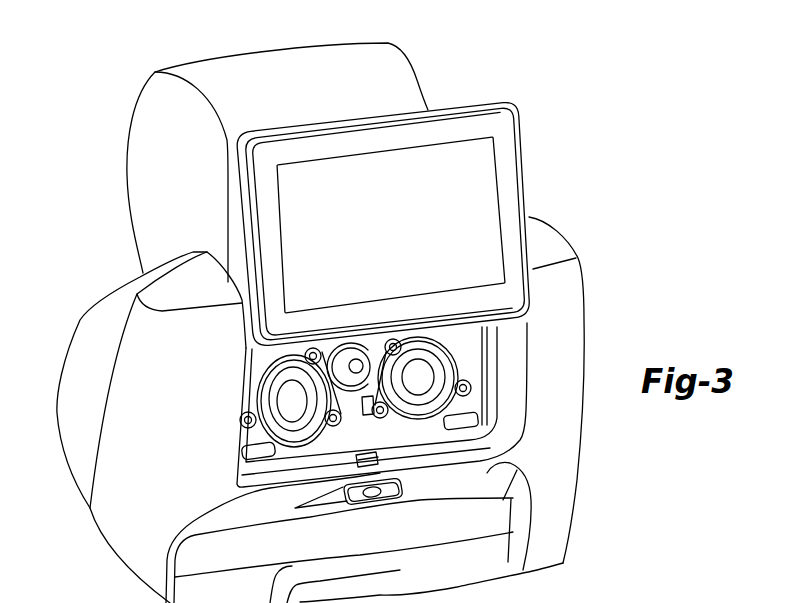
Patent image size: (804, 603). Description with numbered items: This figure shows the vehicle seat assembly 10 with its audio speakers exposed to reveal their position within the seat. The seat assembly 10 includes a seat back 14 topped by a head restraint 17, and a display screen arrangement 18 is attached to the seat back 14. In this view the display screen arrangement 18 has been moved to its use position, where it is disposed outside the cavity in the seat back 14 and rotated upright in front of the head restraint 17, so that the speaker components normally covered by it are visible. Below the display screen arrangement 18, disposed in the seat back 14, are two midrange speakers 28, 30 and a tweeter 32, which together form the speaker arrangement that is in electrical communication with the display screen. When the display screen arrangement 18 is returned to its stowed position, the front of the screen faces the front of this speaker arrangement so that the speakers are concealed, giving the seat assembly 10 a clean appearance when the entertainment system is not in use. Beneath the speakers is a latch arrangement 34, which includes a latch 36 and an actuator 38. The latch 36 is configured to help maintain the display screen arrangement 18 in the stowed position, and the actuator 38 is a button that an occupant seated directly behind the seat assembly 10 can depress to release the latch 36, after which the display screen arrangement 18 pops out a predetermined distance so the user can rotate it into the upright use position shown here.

The seat assembly 10 is at (106, 38).
The seat back 14 is at (565, 546).
The head restraint 17 is at (335, 43).
The display screen arrangement 18 is at (532, 142).
The midrange speaker 28 is at (262, 424).
The midrange speaker 30 is at (467, 411).
The tweeter 32 is at (366, 355).
The latch arrangement 34 is at (420, 498).
The latch 36 is at (380, 461).
The actuator 38 is at (380, 502).